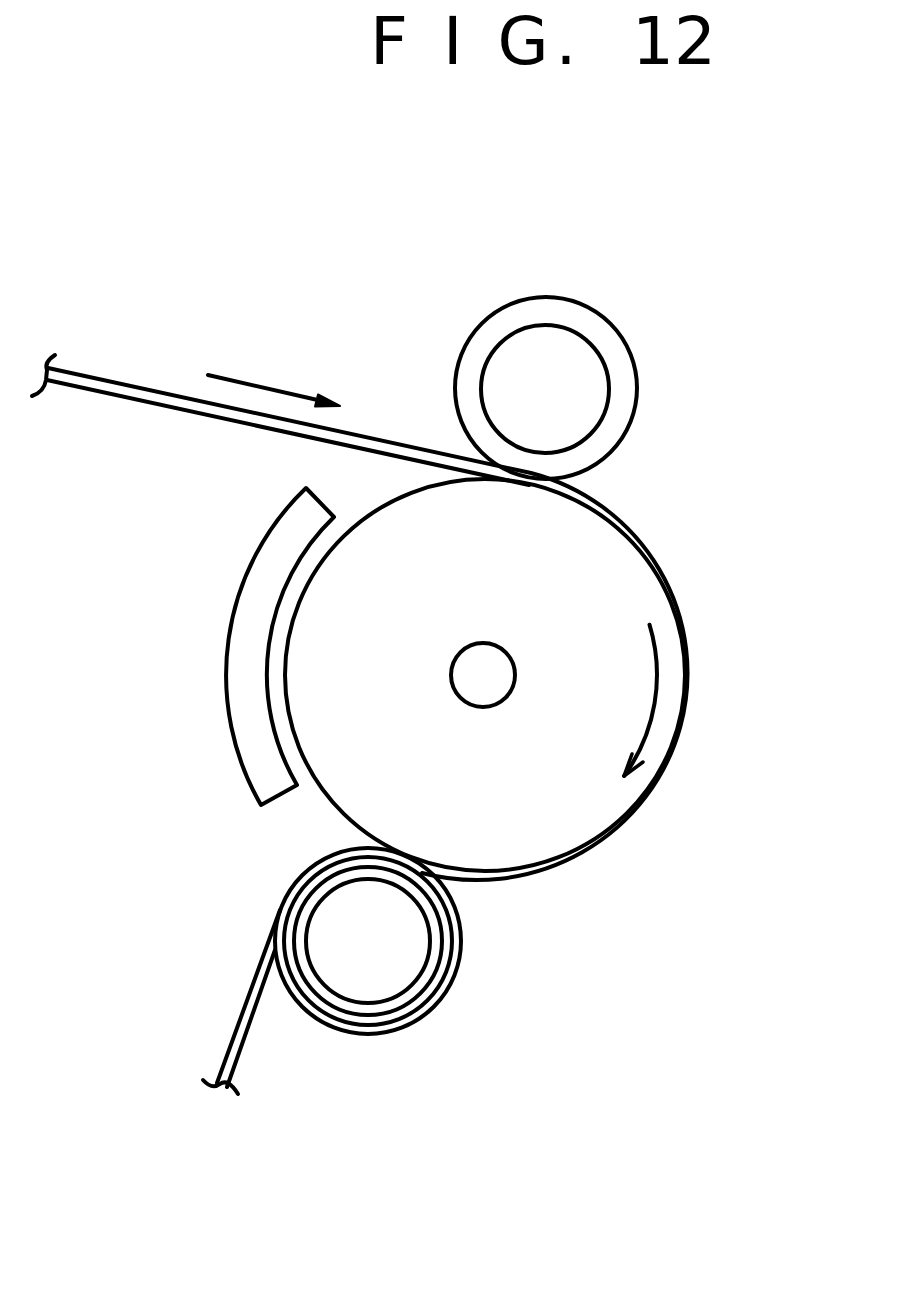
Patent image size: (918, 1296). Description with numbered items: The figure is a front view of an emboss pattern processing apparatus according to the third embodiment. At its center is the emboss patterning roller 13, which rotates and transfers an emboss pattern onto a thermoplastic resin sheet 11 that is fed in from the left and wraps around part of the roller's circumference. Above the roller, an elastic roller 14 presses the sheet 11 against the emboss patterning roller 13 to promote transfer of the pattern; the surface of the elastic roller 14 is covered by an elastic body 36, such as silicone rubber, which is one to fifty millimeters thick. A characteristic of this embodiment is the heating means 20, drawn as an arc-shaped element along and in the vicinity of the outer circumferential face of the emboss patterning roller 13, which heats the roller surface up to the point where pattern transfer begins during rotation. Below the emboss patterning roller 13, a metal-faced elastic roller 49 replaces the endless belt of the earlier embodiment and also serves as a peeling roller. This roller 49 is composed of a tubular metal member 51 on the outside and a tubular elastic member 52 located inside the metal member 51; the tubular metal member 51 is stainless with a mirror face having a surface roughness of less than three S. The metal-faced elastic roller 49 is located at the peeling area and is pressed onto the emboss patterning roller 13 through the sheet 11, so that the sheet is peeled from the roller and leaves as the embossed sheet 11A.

The thermoplastic resin sheet 11 is at (132, 386).
The embossed sheet 11A is at (233, 1023).
The emboss patterning roller 13 is at (628, 582).
The elastic roller 14 is at (587, 395).
The heating means 20 is at (245, 650).
The elastic body 36 is at (548, 310).
The metal-faced elastic roller 49 is at (438, 1001).
The tubular metal member 51 is at (462, 930).
The tubular elastic member 52 is at (363, 1013).